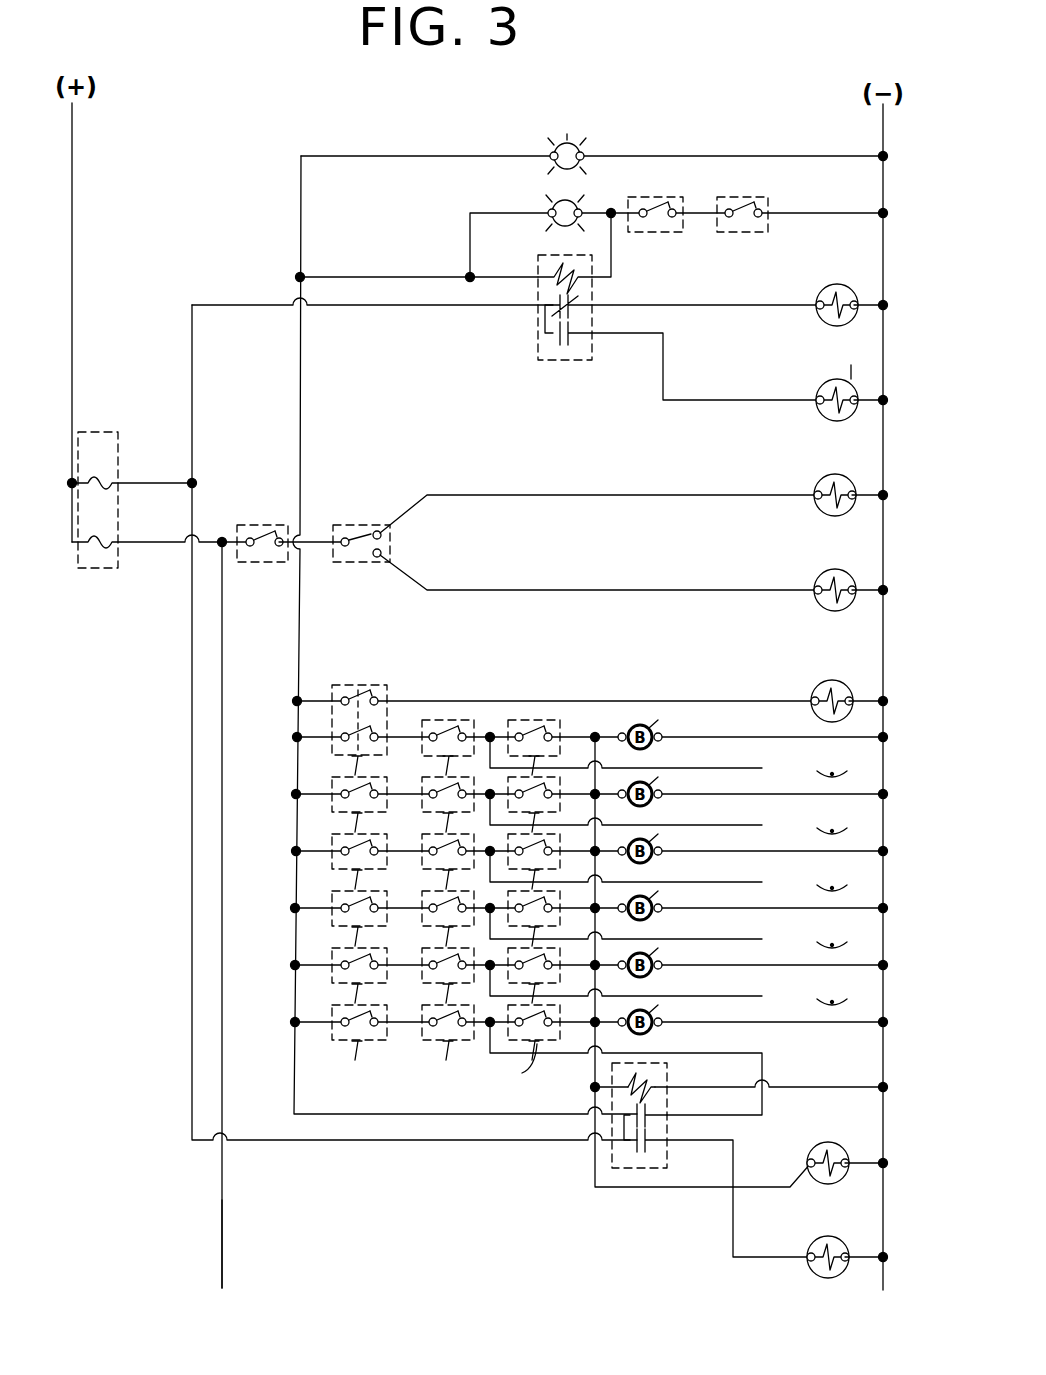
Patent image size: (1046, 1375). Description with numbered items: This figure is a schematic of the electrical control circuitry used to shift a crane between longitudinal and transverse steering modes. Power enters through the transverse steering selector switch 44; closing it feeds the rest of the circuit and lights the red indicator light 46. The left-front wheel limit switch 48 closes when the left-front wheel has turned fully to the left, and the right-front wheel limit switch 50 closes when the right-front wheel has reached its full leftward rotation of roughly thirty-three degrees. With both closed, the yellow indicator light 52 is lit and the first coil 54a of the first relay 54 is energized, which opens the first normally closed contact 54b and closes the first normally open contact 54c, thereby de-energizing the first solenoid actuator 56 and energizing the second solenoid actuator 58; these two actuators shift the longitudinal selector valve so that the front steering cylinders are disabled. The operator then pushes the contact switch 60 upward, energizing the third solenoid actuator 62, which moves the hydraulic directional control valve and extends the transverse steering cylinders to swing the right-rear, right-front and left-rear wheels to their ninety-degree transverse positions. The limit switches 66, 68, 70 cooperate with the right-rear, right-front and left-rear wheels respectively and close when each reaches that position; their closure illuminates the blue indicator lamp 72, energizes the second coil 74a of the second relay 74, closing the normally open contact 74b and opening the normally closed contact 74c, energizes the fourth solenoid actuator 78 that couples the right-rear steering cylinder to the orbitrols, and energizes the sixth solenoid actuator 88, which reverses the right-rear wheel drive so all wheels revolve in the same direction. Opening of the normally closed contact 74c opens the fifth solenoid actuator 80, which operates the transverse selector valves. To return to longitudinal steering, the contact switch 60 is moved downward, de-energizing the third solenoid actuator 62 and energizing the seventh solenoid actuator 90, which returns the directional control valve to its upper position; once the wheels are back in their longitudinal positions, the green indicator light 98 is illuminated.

The transverse steering selector switch 44 is at (247, 523).
The red indicator light 46 is at (576, 142).
The left-front wheel limit switch 48 is at (766, 200).
The right-front wheel limit switch 50 is at (675, 204).
The yellow indicator light 52 is at (553, 202).
The first relay 54 is at (506, 311).
The first coil 54a is at (553, 262).
The first normally closed contact 54b is at (575, 312).
The first normally open contact 54c is at (574, 346).
The first solenoid actuator 56 is at (823, 291).
The second solenoid actuator 58 is at (822, 384).
The contact switch 60 is at (343, 523).
The third solenoid actuator 62 is at (818, 487).
The limit switch 66 is at (366, 683).
The limit switch 68 is at (438, 718).
The limit switch 70 is at (524, 718).
The blue indicator lamp 72 is at (650, 725).
The second relay 74 is at (715, 1158).
The second coil 74a is at (646, 1092).
The normally open contact 74b is at (655, 1122).
The normally closed contact 74c is at (622, 1170).
The fourth solenoid actuator 78 is at (836, 684).
The fifth solenoid actuator 80 is at (854, 1231).
The sixth solenoid actuator 88 is at (813, 1148).
The seventh solenoid actuator 90 is at (843, 577).
The green indicator light 98 is at (405, 1285).